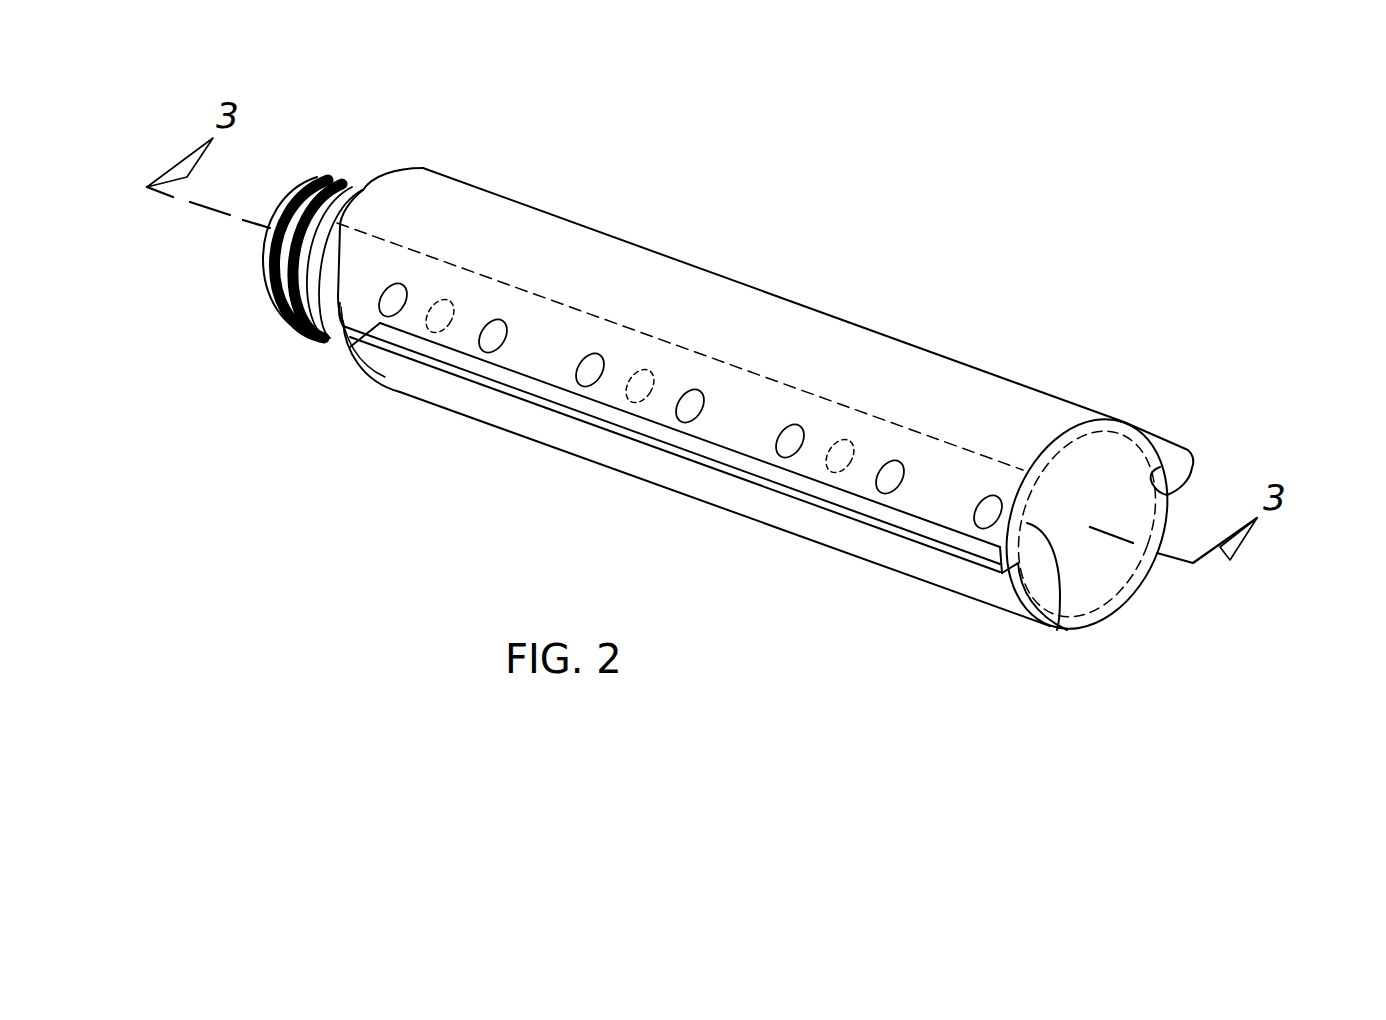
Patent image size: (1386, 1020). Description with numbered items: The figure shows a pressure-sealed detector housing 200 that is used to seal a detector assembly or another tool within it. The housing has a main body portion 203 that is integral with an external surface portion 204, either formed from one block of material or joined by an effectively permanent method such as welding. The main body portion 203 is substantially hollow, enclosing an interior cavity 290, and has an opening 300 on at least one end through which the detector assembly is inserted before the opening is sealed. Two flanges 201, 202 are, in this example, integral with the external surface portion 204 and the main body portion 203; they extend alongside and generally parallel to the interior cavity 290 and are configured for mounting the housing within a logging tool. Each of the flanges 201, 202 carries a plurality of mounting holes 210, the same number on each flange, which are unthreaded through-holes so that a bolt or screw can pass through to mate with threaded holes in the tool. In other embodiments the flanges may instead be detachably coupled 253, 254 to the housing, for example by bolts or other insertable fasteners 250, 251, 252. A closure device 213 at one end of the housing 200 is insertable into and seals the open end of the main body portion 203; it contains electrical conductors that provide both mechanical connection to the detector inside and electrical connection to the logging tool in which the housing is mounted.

The pressure-sealed detector housing 200 is at (1032, 210).
The flange 201 is at (1193, 458).
The flange 202 is at (928, 547).
The main body portion 203 is at (1017, 615).
The external surface portion 204 is at (888, 368).
The mounting holes 210 is at (983, 530).
The closure device 213 is at (305, 192).
The insertable fastener 250 is at (427, 310).
The insertable fastener 251 is at (627, 386).
The insertable fastener 252 is at (827, 455).
The detachable coupling 253 is at (1167, 495).
The detachable coupling 254 is at (1057, 630).
The interior cavity 290 is at (1110, 567).
The opening 300 is at (262, 250).